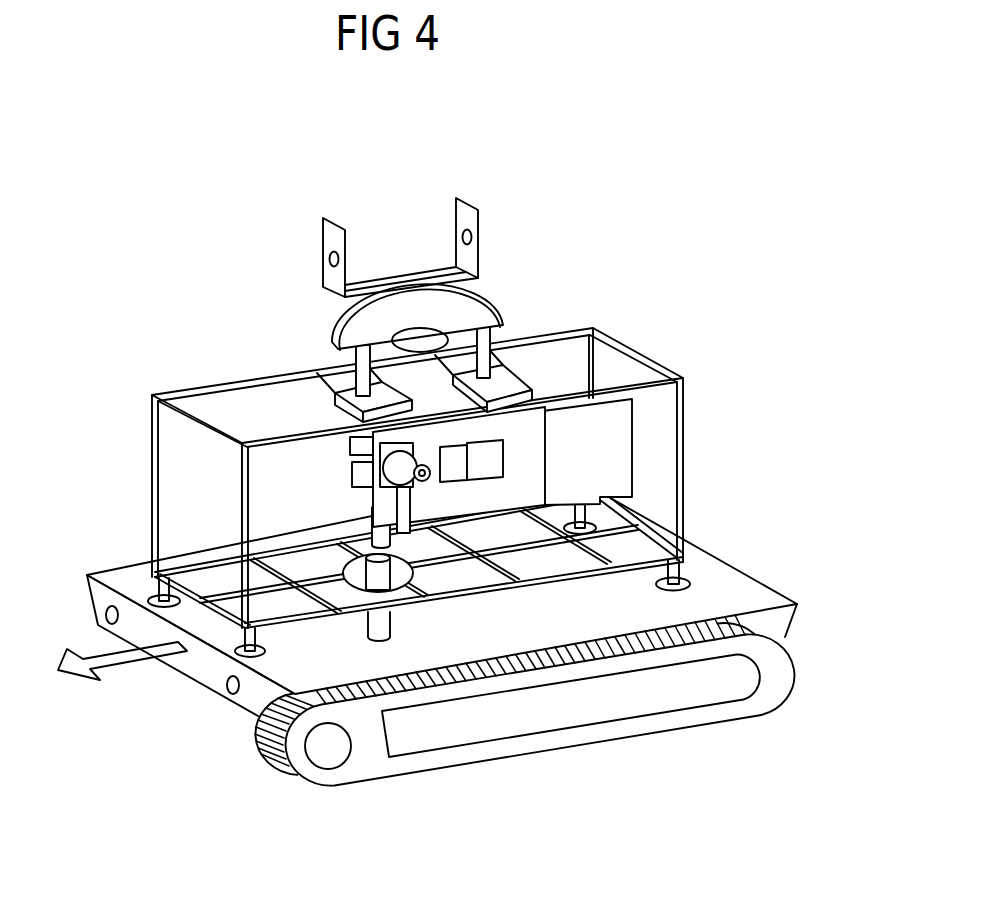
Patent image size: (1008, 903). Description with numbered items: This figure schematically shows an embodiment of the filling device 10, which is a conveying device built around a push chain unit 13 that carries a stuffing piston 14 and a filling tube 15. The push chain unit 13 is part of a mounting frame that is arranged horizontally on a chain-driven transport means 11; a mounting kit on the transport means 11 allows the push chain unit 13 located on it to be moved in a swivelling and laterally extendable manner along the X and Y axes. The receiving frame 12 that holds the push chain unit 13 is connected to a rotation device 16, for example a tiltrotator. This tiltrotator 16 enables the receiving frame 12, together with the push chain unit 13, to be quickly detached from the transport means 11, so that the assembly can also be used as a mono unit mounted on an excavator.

The filling device 10 is at (172, 330).
The chain-driven transport means 11 is at (770, 600).
The receiving frame 12 is at (593, 326).
The push chain unit 13 is at (617, 453).
The stuffing piston 14 is at (377, 522).
The filling tube 15 is at (378, 622).
The rotation device 16 is at (473, 203).